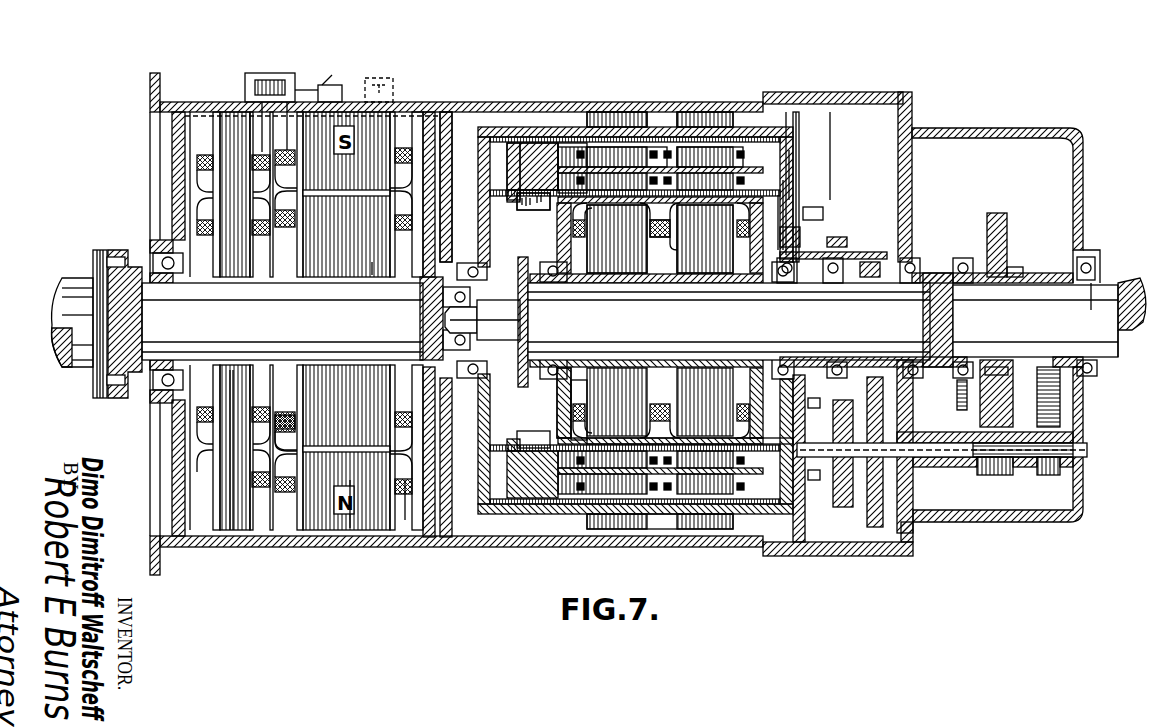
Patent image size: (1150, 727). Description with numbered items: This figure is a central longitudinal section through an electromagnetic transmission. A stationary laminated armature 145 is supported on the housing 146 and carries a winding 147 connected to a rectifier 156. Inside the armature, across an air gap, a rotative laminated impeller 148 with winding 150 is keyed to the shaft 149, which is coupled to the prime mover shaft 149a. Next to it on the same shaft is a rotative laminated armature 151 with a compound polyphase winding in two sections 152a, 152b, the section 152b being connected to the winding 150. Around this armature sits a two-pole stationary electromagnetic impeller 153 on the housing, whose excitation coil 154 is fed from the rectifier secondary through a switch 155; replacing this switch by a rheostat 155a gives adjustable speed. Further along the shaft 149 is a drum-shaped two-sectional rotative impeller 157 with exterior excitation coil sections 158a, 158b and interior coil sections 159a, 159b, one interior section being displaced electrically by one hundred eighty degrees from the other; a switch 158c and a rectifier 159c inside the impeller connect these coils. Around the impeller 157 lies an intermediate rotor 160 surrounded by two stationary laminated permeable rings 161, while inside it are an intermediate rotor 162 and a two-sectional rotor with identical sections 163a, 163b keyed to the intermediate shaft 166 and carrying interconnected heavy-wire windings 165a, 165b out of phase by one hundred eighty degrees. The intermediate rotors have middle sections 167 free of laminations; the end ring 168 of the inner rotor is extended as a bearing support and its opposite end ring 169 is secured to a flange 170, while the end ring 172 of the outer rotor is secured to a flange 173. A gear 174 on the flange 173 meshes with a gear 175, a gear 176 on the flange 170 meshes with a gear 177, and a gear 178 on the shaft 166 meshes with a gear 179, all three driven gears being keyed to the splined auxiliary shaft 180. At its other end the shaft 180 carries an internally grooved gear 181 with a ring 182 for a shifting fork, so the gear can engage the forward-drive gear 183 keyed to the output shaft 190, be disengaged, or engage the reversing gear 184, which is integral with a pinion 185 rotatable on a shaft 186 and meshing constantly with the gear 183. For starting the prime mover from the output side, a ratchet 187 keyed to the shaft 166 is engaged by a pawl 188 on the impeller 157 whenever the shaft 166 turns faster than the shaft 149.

The stationary laminated armature 145 is at (224, 110).
The housing 146 is at (507, 195).
The winding 147 is at (203, 153).
The rotative laminated impeller 148 is at (228, 390).
The shaft 149 is at (168, 300).
The prime mover shaft 149a is at (72, 283).
The winding 150 is at (228, 420).
The rotative laminated armature 151 is at (373, 268).
The winding section 152a is at (287, 420).
The winding section 152b is at (293, 417).
The stationary electromagnetic impeller 153 is at (350, 528).
The excitation coil 154 is at (405, 513).
The switch 155 is at (322, 86).
The rheostat 155a is at (378, 76).
The rectifier 156 is at (273, 76).
The two-sectional rotative electromagnetic impeller 157 is at (533, 118).
The exterior excitation coil section 158a is at (660, 150).
The exterior excitation coil section 158b is at (750, 150).
The switch 158c is at (567, 149).
The interior excitation coil section 159a is at (579, 182).
The interior excitation coil section 159b is at (788, 170).
The rectifier 159c is at (518, 150).
The intermediate rotor 160 is at (585, 112).
The stationary laminated magnetically permeable rings 161 is at (700, 113).
The intermediate rotor 162 is at (588, 444).
The rotor section 163a is at (612, 272).
The rotor section 163b is at (724, 271).
The winding 165a is at (660, 232).
The winding 165b is at (677, 230).
The intermediate shaft 166 is at (915, 298).
The middle sections 167 is at (688, 450).
The end ring 168 is at (572, 422).
The end ring 169 is at (791, 193).
The flange 170 is at (782, 200).
The end ring 172 is at (788, 103).
The flange 173 is at (793, 143).
The gear 174 is at (812, 208).
The gear 175 is at (818, 478).
The gear 176 is at (830, 238).
The gear 177 is at (857, 500).
The gear 178 is at (858, 268).
The gear 179 is at (880, 528).
The auxiliary shaft 180 is at (923, 460).
The internally grooved gear 181 is at (1008, 484).
The ring 182 is at (983, 474).
The forward-drive gear 183 is at (997, 216).
The reversing gear 184 is at (1063, 418).
The pinion 185 is at (1028, 366).
The shaft 186 is at (958, 400).
The ratchet 187 is at (568, 386).
The pawl 188 is at (527, 260).
The output shaft 190 is at (1110, 282).